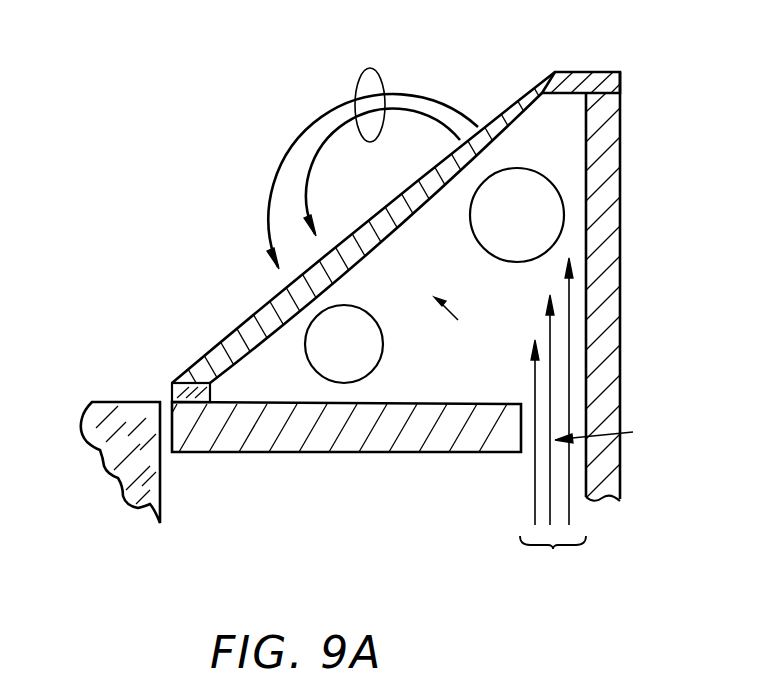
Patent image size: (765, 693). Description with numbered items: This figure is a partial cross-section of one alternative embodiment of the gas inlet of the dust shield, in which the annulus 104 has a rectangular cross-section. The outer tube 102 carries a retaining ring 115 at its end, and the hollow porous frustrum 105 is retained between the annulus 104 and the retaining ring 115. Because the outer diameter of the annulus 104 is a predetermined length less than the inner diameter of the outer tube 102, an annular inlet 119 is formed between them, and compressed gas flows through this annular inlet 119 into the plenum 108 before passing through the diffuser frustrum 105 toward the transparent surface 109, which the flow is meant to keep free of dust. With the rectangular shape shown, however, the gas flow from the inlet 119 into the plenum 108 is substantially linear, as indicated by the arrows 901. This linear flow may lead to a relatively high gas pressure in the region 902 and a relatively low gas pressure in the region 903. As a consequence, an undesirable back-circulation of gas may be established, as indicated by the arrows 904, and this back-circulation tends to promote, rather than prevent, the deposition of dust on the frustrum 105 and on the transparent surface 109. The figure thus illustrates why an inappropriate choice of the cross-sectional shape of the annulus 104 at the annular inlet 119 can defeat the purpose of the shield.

The arrows 904 is at (388, 52).
The retaining ring 115 is at (597, 72).
The outer tube 102 is at (622, 268).
The hollow porous frustrum 105 is at (212, 351).
The annulus 104 is at (356, 452).
The transparent surface 109 is at (105, 402).
The region 902 is at (524, 150).
The region 903 is at (371, 371).
The plenum 108 is at (468, 324).
The arrows 901 is at (553, 421).
The annular inlet 119 is at (618, 436).